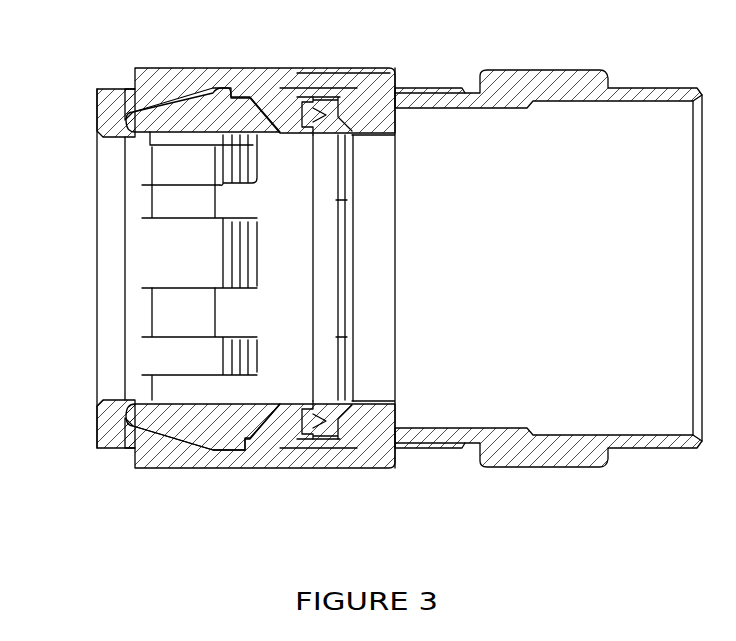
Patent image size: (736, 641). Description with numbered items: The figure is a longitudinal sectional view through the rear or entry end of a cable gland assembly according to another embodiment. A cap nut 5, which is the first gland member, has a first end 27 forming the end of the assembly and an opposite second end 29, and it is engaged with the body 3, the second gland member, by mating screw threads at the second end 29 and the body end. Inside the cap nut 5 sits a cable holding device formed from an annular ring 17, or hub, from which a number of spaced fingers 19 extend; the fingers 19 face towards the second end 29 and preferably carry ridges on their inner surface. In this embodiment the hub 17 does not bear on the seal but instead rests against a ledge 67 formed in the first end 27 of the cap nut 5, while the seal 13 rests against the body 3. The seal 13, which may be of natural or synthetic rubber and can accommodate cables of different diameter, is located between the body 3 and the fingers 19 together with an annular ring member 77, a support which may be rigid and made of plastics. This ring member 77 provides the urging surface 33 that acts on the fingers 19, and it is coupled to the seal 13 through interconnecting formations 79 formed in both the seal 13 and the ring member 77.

The body 3 is at (529, 83).
The cap nut 5 is at (187, 80).
The seal 13 is at (327, 106).
The annular ring 17 is at (125, 323).
The fingers 19 is at (224, 113).
The first end 27 is at (112, 100).
The second end 29 is at (386, 450).
The urging surface 33 is at (250, 405).
The ledge 67 is at (127, 412).
The annular ring member 77 is at (292, 435).
The interconnecting formations 79 is at (307, 420).